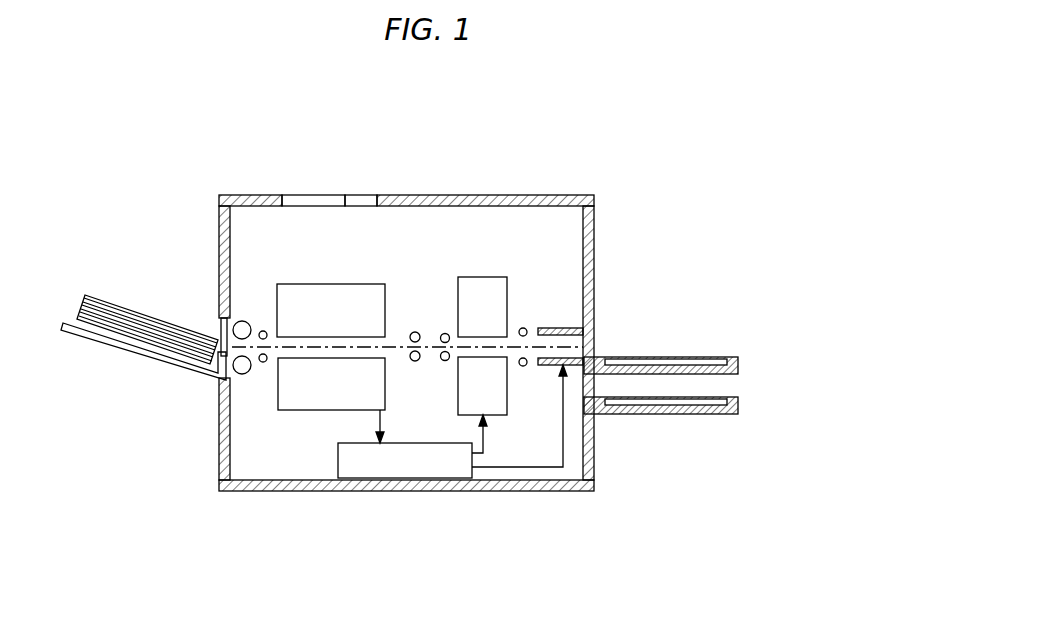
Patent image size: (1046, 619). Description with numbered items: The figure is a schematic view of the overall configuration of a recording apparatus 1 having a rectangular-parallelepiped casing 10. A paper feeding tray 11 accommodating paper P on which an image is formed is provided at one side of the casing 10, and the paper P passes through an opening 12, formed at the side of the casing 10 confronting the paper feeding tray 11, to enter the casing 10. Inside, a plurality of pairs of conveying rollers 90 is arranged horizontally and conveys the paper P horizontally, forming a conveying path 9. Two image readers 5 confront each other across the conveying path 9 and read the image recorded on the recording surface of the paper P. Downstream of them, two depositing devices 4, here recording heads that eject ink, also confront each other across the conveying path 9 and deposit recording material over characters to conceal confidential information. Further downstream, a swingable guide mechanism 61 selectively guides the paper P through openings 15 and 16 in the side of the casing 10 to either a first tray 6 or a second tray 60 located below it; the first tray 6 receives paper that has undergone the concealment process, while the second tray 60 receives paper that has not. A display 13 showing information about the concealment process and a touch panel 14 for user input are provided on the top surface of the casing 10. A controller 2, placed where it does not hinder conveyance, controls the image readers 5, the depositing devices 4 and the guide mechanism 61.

The recording apparatus 1 is at (452, 334).
The casing 10 is at (609, 201).
The display 13 is at (322, 203).
The touch panel 14 is at (366, 200).
The opening 12 is at (219, 318).
The paper P is at (150, 318).
The paper feeding tray 11 is at (148, 376).
The conveying path 9 is at (402, 345).
The image reader 5 is at (360, 295).
The conveying rollers 90 is at (444, 361).
The depositing device 4 is at (490, 290).
The guide mechanism 61 is at (560, 330).
The opening 15 is at (595, 333).
The first tray 6 is at (740, 362).
The second tray 60 is at (740, 402).
The opening 16 is at (586, 372).
The controller 2 is at (416, 491).